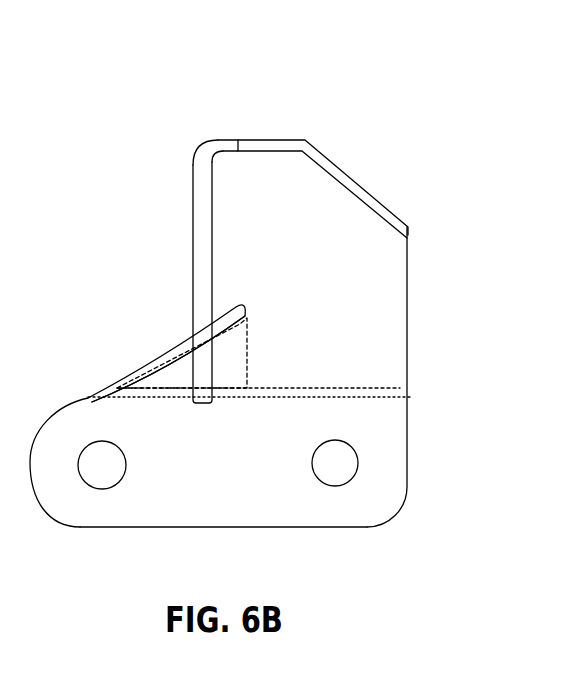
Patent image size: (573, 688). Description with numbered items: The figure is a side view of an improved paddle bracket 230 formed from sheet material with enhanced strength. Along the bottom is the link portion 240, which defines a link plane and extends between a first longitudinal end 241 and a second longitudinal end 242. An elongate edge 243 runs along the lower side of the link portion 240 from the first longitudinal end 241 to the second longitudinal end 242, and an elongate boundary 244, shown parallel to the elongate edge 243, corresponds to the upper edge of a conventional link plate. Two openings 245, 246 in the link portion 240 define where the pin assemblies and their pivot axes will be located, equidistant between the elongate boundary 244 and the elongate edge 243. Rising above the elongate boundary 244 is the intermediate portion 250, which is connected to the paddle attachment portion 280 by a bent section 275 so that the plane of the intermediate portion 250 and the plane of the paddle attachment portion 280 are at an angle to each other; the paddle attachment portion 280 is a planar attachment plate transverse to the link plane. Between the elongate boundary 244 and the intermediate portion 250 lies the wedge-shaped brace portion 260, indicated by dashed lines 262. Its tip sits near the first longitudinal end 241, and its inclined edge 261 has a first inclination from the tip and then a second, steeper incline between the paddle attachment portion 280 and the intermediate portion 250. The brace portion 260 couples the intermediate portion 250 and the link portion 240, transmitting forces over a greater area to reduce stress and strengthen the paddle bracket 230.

The paddle bracket 230 is at (254, 103).
The link portion 240 is at (205, 507).
The first longitudinal end 241 is at (26, 470).
The second longitudinal end 242 is at (407, 487).
The elongate edge 243 is at (182, 527).
The elongate boundary 244 is at (407, 395).
The opening 245 is at (105, 468).
The opening 246 is at (326, 470).
The intermediate portion 250 is at (330, 208).
The brace portion 260 is at (145, 368).
The inclined edge 261 is at (120, 377).
The dashed lines 262 is at (178, 383).
The bent section 275 is at (213, 146).
The paddle attachment portion 280 is at (193, 227).